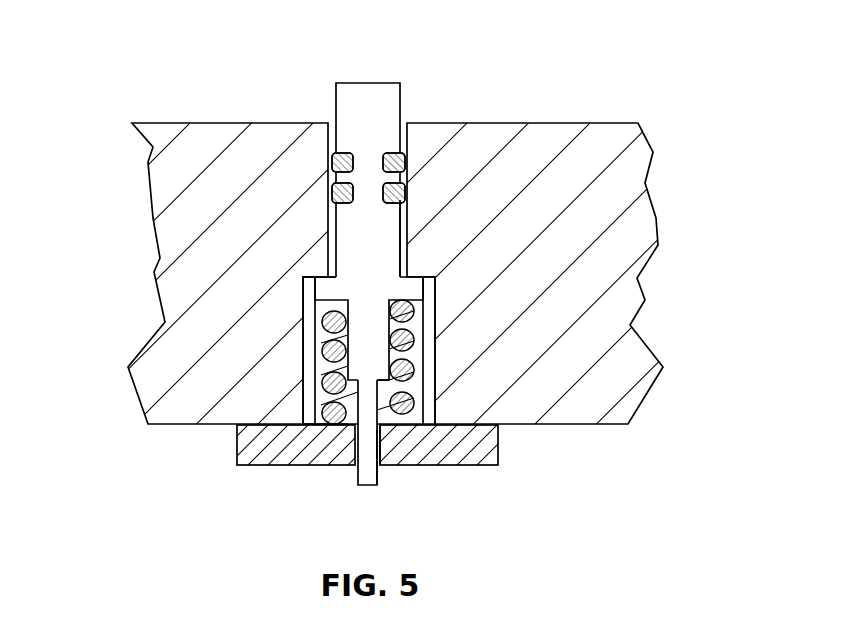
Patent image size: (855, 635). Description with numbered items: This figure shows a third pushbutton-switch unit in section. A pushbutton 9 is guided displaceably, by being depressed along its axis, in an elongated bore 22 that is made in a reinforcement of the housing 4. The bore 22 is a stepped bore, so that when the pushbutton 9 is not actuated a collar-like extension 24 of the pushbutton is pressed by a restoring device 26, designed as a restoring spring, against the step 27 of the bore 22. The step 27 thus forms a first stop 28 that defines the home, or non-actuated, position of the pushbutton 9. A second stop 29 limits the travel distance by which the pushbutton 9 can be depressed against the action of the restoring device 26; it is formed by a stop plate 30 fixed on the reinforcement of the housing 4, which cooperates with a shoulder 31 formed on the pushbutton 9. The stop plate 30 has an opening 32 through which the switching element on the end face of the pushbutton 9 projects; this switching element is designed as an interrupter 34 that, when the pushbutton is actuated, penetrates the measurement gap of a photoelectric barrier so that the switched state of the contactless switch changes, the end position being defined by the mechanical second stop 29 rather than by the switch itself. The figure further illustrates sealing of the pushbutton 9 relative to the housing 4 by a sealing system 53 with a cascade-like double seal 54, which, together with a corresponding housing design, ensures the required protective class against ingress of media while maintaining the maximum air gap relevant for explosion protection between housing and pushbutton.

The housing 4 is at (539, 143).
The pushbutton 9 is at (388, 100).
The elongated bore 22 is at (403, 264).
The collar-like extension 24 is at (412, 288).
The restoring device 26 is at (424, 331).
The step 27 is at (413, 268).
The first stop 28 is at (318, 268).
The second stop 29 is at (315, 410).
The stop plate 30 is at (245, 447).
The shoulder 31 is at (390, 395).
The opening 32 is at (356, 468).
The interrupter 34 is at (373, 476).
The sealing system 53 is at (416, 166).
The cascade-like double seal 54 is at (326, 192).